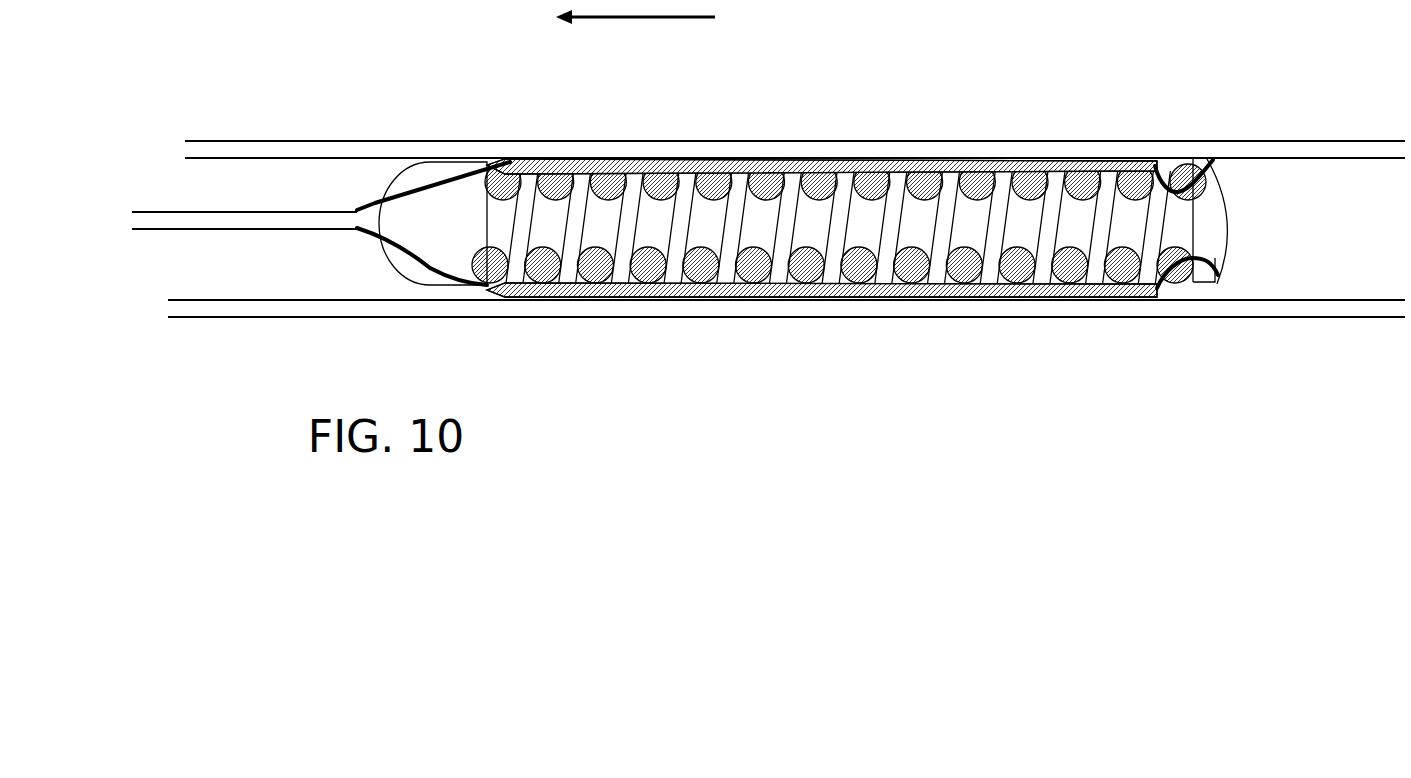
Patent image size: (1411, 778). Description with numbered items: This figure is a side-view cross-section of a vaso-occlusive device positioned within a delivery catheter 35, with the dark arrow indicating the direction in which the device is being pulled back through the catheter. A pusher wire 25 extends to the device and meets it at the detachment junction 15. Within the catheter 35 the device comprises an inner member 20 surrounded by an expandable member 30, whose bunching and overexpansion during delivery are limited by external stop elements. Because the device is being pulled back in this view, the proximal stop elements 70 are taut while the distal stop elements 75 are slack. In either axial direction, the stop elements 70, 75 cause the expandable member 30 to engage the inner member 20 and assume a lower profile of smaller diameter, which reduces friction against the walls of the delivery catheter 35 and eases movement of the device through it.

The detachment junction 15 is at (363, 208).
The inner member 20 is at (1085, 212).
The pusher wire 25 is at (292, 210).
The expandable member 30 is at (750, 158).
The delivery catheter 35 is at (963, 140).
The proximal stop elements 70 is at (450, 178).
The distal stop elements 75 is at (1226, 228).